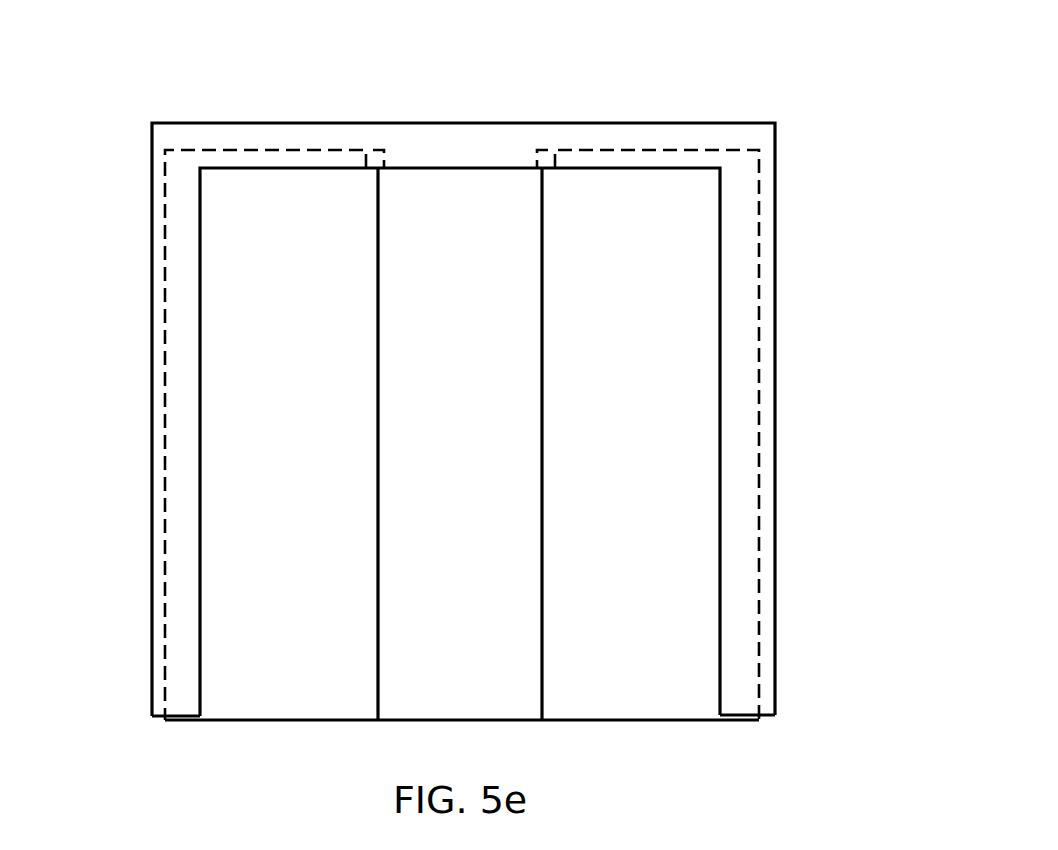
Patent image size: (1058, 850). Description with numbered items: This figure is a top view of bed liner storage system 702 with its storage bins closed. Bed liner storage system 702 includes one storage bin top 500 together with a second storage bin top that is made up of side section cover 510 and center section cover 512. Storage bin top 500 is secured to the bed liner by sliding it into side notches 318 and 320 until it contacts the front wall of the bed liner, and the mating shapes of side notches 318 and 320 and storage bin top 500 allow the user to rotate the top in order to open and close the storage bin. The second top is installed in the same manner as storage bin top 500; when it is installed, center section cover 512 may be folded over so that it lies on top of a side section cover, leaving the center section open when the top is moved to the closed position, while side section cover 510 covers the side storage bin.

The bed liner storage system 702 is at (582, 55).
The storage bin top 500 is at (243, 277).
The center section cover 512 is at (402, 185).
The side section cover 510 is at (680, 347).
The side notch 320 is at (163, 400).
The side notch 318 is at (760, 428).